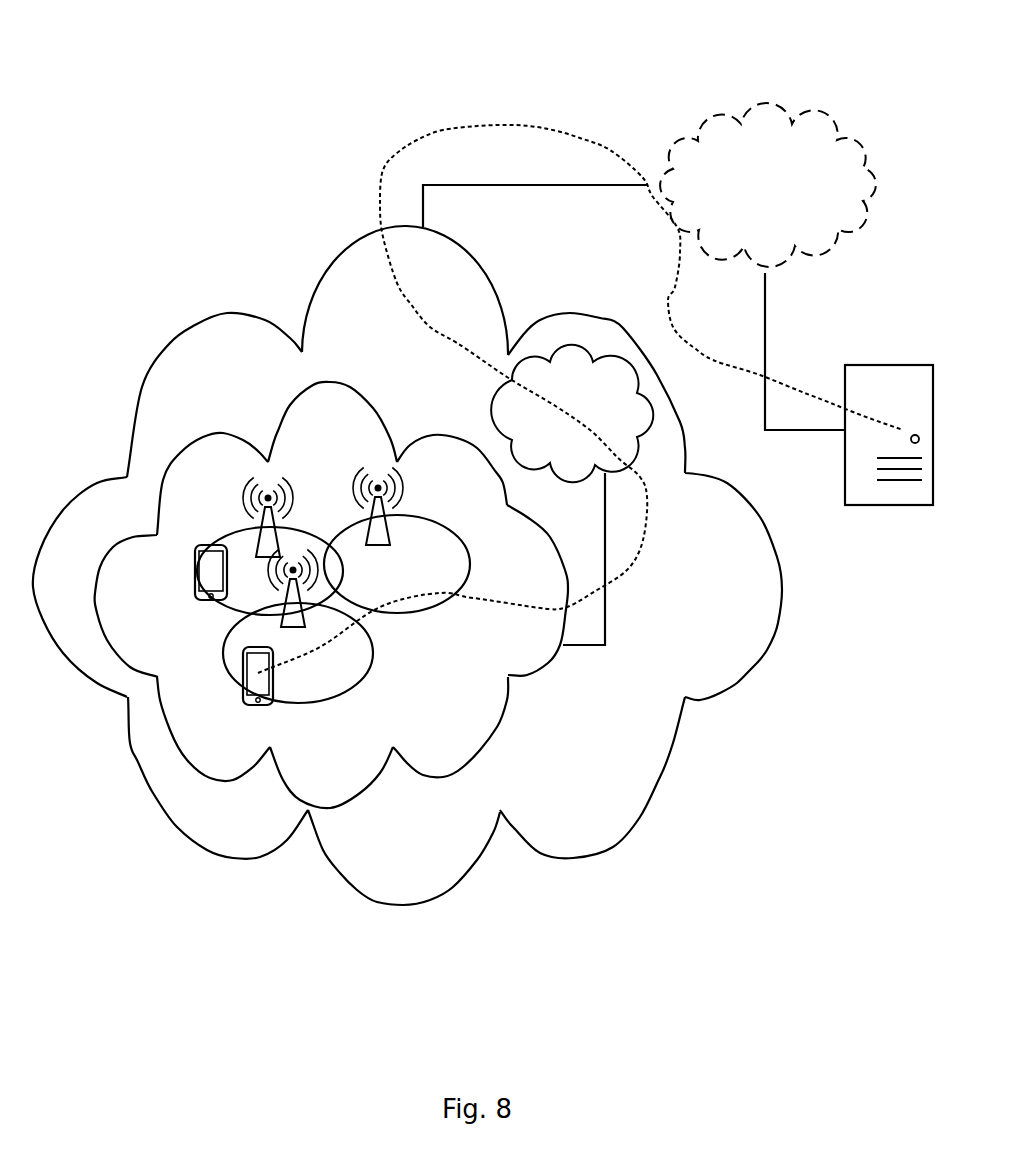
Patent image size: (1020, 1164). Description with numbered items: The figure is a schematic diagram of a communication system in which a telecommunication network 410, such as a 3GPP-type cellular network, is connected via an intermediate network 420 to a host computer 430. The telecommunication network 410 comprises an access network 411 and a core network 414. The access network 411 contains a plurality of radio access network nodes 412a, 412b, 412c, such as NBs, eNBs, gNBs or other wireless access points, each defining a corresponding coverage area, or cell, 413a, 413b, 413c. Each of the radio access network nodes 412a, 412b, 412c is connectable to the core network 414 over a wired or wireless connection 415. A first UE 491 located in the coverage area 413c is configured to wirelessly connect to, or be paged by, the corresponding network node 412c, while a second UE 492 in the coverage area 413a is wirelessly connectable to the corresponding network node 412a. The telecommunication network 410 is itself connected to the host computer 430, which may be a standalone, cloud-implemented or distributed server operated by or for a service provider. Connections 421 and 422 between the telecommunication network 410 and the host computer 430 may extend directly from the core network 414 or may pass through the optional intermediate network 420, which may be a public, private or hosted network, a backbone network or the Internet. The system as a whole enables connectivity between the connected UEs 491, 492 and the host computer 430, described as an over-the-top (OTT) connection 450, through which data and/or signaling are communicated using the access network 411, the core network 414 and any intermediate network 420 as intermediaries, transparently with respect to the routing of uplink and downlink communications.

The telecommunication network 410 is at (390, 341).
The access network 411 is at (347, 451).
The radio access network node 412a is at (303, 632).
The radio access network node 412b is at (392, 496).
The radio access network node 412c is at (243, 497).
The coverage area 413a is at (372, 663).
The coverage area 413b is at (437, 610).
The coverage area 413c is at (243, 532).
The core network 414 is at (599, 396).
The wired or wireless connection 415 is at (607, 611).
The intermediate network 420 is at (746, 202).
The connection 421 is at (548, 185).
The connection 422 is at (798, 432).
The host computer 430 is at (905, 507).
The OTT connection 450 is at (403, 147).
The first UE 491 is at (197, 593).
The second UE 492 is at (240, 707).